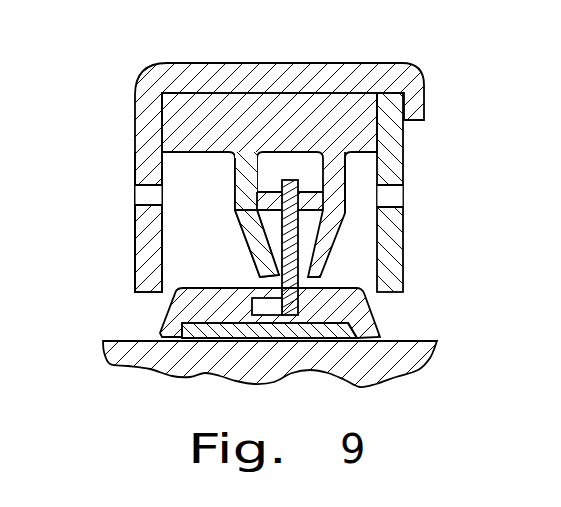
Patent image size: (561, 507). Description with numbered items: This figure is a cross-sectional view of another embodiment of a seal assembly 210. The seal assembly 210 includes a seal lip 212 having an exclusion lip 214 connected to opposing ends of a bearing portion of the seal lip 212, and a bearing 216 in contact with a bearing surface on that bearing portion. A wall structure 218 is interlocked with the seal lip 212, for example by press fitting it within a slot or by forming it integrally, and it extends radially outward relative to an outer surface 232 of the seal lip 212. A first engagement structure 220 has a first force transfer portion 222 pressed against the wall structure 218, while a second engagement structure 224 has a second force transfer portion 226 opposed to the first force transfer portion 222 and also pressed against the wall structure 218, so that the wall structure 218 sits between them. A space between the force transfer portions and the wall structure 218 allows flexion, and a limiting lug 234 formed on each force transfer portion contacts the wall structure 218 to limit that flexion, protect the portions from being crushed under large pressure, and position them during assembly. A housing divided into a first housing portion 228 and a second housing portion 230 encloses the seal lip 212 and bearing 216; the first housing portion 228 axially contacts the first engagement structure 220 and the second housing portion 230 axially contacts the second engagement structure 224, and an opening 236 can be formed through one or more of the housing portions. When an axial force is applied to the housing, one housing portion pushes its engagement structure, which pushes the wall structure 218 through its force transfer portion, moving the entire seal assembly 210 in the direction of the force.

The seal assembly 210 is at (126, 91).
The seal lip 212 is at (232, 312).
The exclusion lip 214 is at (157, 322).
The bearing 216 is at (280, 335).
The wall structure 218 is at (292, 240).
The first engagement structure 220 is at (210, 115).
The first force transfer portion 222 is at (248, 233).
The second engagement structure 224 is at (355, 107).
The second force transfer portion 226 is at (343, 173).
The first housing portion 228 is at (143, 152).
The second housing portion 230 is at (398, 140).
The outer surface 232 is at (210, 287).
The limiting lug 234 is at (312, 197).
The opening 236 is at (143, 198).